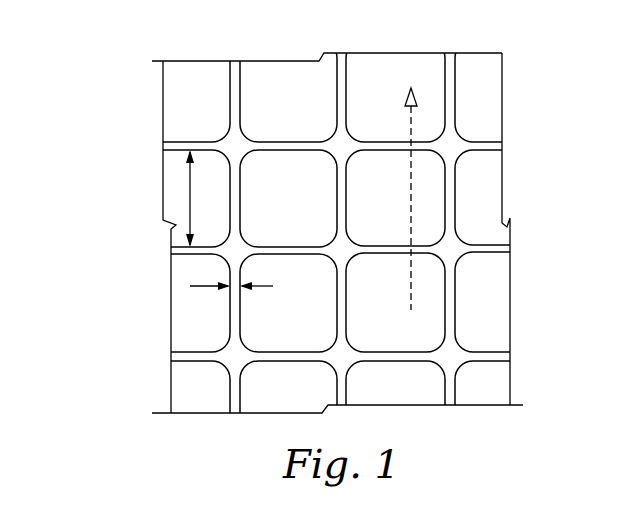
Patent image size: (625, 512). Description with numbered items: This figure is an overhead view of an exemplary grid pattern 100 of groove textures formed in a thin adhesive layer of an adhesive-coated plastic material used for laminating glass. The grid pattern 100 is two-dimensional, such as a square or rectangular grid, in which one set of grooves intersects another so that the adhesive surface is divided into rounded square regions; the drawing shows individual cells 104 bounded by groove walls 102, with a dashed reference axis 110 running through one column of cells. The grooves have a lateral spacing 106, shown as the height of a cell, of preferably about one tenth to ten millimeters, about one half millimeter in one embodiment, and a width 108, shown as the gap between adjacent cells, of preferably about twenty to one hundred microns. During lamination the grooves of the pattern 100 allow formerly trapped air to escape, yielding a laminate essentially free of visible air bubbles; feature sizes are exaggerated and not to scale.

The grid pattern 100 is at (106, 282).
The cell boundary wall 102 is at (236, 214).
The cell 104 is at (305, 193).
The lateral spacing 106 is at (190, 200).
The width 108 is at (257, 287).
The axis line A 110 is at (411, 203).